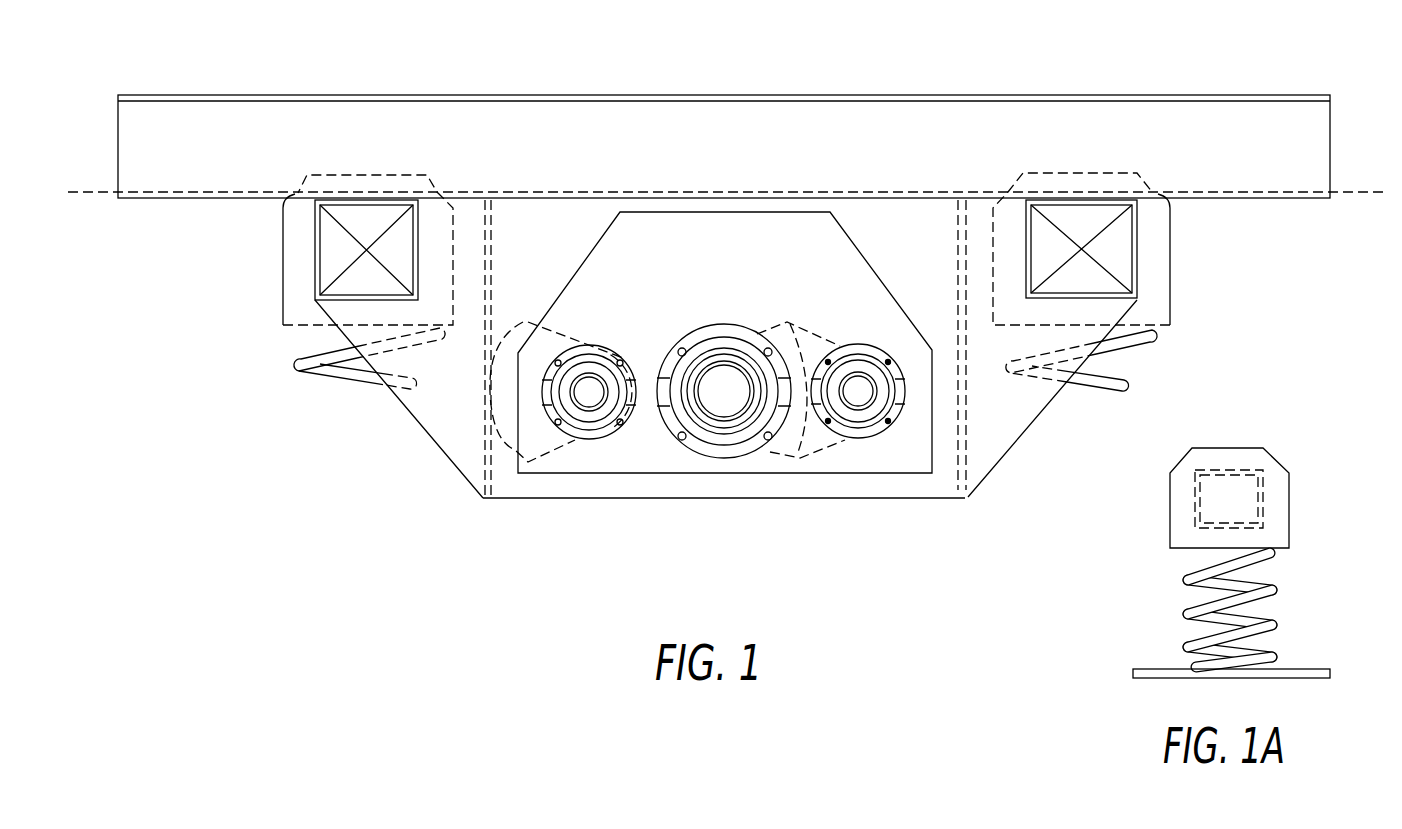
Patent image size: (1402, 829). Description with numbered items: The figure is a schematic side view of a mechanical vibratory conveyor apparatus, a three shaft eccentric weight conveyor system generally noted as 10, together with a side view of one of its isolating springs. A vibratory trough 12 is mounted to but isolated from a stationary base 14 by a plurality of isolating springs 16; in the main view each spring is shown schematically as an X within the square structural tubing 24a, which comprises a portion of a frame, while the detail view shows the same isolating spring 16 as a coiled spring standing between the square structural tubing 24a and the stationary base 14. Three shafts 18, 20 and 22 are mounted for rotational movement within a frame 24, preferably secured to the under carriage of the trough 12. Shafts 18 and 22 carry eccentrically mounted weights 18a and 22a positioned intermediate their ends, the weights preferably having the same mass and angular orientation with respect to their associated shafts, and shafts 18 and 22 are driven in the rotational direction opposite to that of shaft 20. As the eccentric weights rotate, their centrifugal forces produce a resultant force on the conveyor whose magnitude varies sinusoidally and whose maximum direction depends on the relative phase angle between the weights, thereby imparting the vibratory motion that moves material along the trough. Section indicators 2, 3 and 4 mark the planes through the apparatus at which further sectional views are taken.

In FIG. 1, the section line 2- 2 is at (110, 192).
In FIG. 1, the section line 3- 3 is at (638, 68).
In FIG. 1, the section line 4- 4 is at (481, 70).
In FIG. 1, the three shaft eccentric weight conveyor system 10 is at (991, 54).
In FIG. 1, the vibratory trough 12 is at (1197, 95).
In FIG. 1A, the stationary base 14 is at (1320, 668).
In FIG. 1, the isolating spring 16 is at (357, 373).
In FIG. 1A, the isolating spring 16 is at (1276, 585).
In FIG. 1, the shaft 18 is at (866, 396).
In FIG. 1, the eccentrically mounted weight 18a is at (835, 447).
In FIG. 1, the shaft 20 is at (772, 455).
In FIG. 1, the shaft 22 is at (590, 403).
In FIG. 1, the eccentrically mounted weight 22a is at (480, 503).
In FIG. 1, the frame 24 is at (437, 450).
In FIG. 1, the square structural tubing 24a is at (315, 253).
In FIG. 1A, the square structural tubing 24a is at (1267, 492).